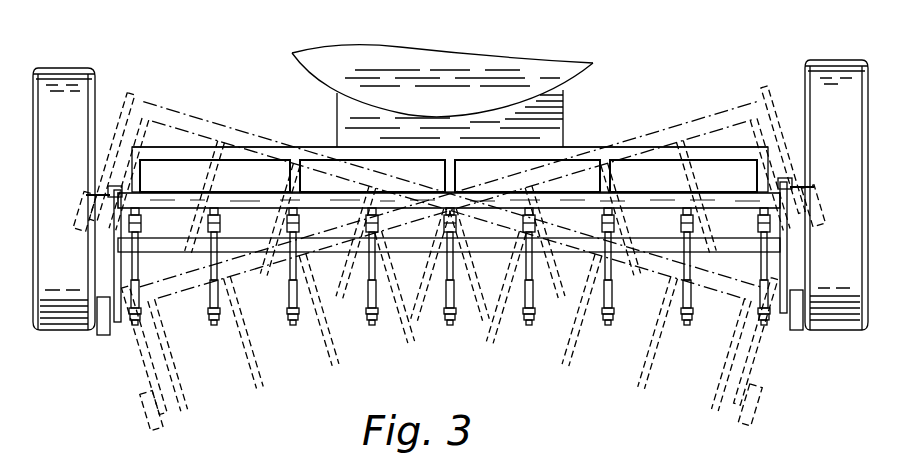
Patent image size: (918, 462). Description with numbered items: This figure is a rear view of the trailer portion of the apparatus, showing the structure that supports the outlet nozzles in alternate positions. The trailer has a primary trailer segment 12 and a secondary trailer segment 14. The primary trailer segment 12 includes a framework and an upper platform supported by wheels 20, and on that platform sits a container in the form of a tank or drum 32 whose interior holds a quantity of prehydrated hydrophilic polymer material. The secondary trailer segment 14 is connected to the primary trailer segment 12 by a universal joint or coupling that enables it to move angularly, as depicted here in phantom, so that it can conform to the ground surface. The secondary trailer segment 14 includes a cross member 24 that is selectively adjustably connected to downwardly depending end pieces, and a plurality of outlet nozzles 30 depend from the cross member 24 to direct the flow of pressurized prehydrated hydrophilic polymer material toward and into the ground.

The primary trailer segment 12 is at (530, 143).
The secondary trailer segment 14 is at (337, 193).
The wheels 20 is at (70, 332).
The cross member 24 is at (155, 238).
The outlet nozzles 30 is at (291, 328).
The tank or drum 32 is at (500, 77).